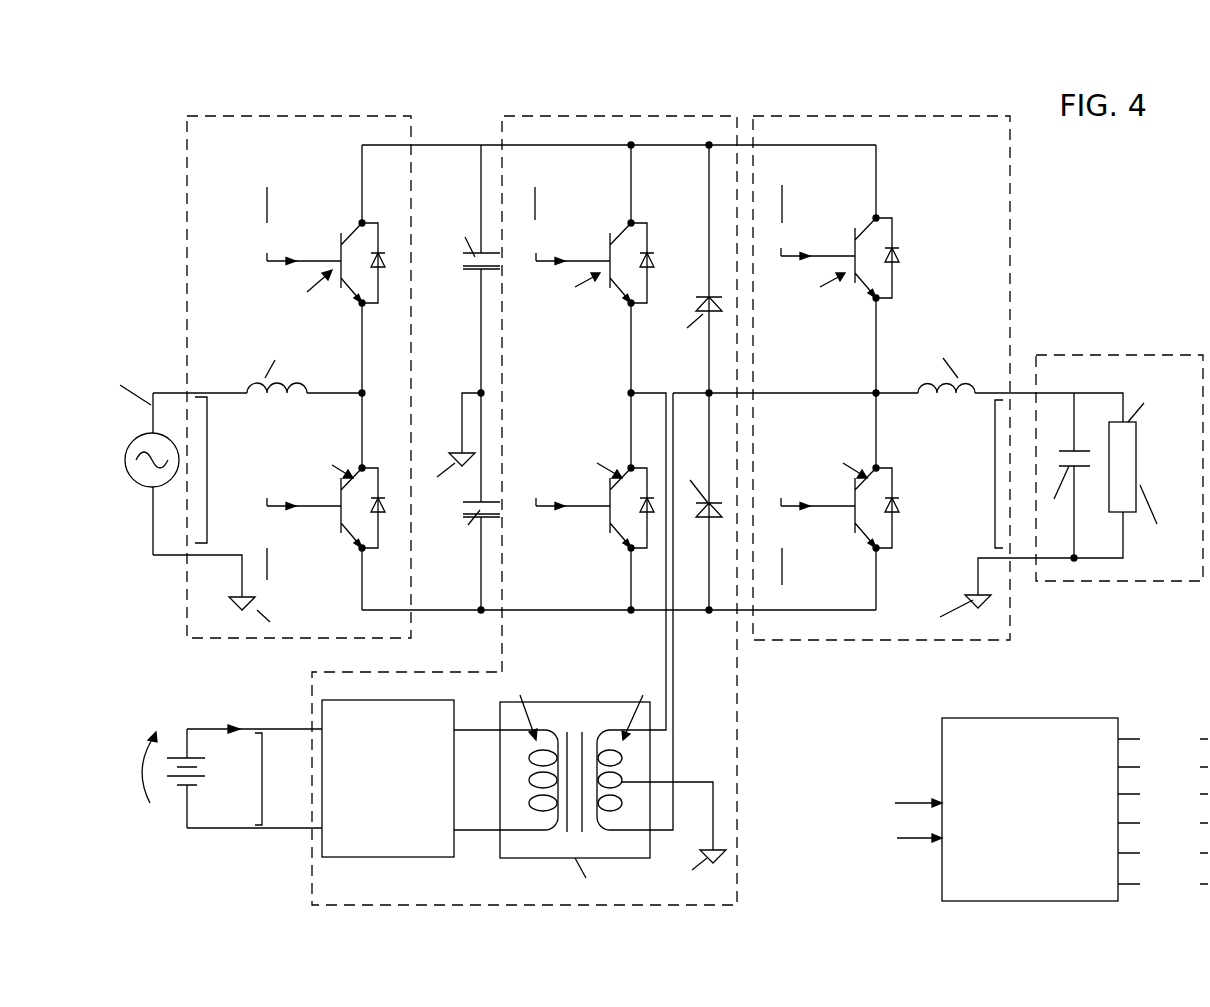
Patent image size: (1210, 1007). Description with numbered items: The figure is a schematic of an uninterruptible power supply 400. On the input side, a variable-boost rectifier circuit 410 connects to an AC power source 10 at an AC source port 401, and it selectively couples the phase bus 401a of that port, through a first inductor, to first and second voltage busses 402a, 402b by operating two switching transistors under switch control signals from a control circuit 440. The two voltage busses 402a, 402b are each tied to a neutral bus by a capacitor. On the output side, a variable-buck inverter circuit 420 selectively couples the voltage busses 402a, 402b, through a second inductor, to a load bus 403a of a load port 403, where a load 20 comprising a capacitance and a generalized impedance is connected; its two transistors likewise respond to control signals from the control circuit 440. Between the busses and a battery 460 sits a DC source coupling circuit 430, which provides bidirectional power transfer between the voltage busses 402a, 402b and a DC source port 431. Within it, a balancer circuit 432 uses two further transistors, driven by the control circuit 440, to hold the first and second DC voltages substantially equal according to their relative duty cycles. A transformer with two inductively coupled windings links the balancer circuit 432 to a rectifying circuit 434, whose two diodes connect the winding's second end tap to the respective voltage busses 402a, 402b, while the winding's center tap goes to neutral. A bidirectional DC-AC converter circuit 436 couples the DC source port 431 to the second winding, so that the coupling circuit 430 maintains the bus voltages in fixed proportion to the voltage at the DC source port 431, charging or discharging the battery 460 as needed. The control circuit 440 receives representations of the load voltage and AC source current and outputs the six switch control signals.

The AC power source 10 is at (132, 482).
The load 20 is at (1138, 353).
The uninterruptible power supply 400 is at (1134, 248).
The AC source port 401 is at (207, 470).
The phase bus 401a is at (187, 392).
The first voltage bus 402a is at (481, 145).
The second voltage bus 402b is at (483, 614).
The load port 403 is at (995, 473).
The load bus 403a is at (1019, 390).
The variable-boost rectifier circuit 410 is at (187, 230).
The variable-buck inverter circuit 420 is at (1012, 232).
The DC source coupling circuit 430 is at (747, 723).
The DC source port 431 is at (262, 783).
The balancer circuit 432 is at (650, 212).
The rectifying circuit 434 is at (693, 280).
The bidirectional DC-AC converter circuit 436 is at (423, 858).
The control circuit 440 is at (1048, 717).
The battery 460 is at (183, 778).